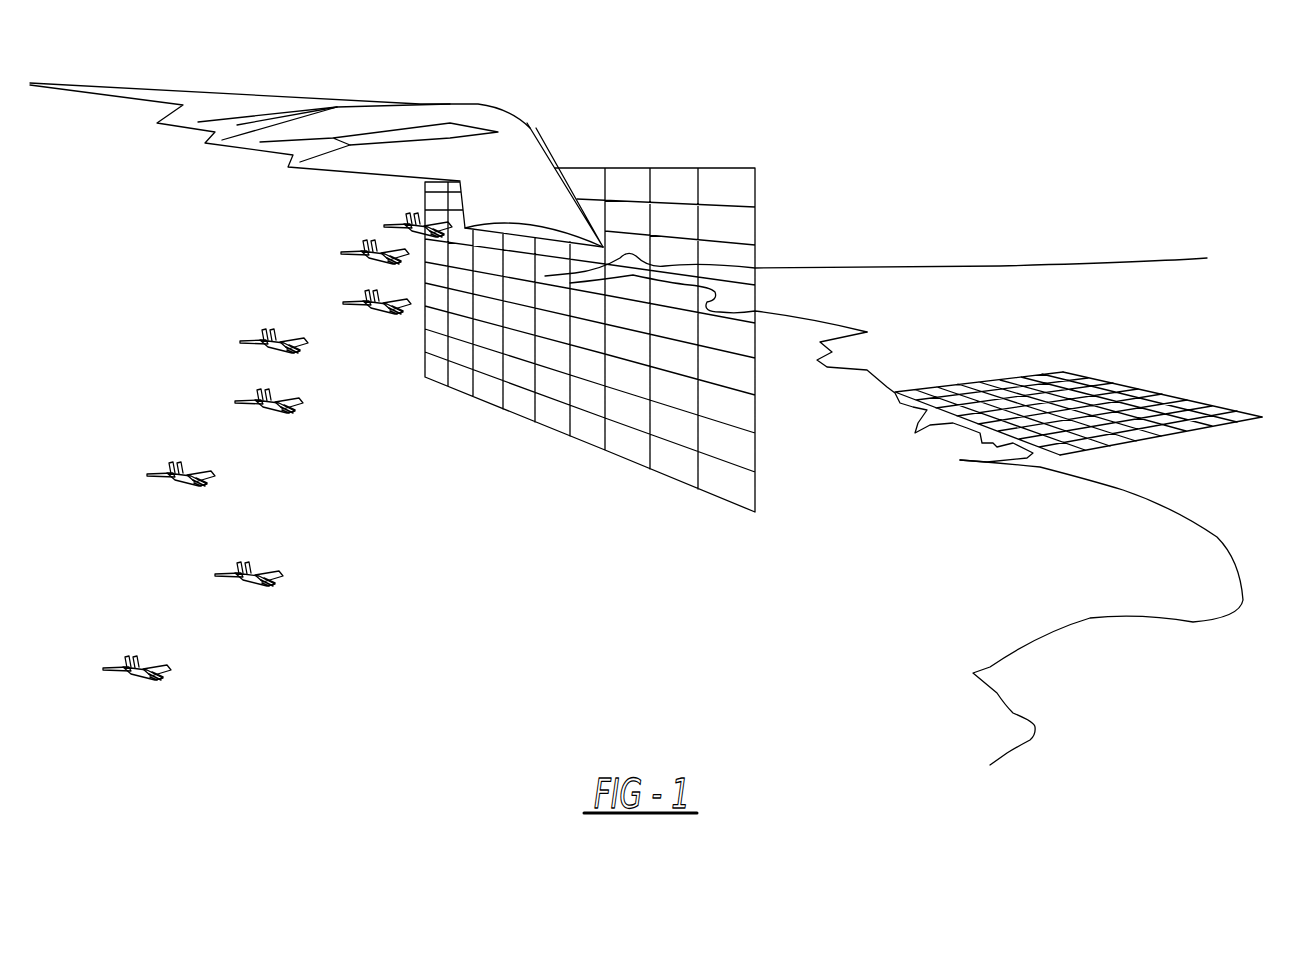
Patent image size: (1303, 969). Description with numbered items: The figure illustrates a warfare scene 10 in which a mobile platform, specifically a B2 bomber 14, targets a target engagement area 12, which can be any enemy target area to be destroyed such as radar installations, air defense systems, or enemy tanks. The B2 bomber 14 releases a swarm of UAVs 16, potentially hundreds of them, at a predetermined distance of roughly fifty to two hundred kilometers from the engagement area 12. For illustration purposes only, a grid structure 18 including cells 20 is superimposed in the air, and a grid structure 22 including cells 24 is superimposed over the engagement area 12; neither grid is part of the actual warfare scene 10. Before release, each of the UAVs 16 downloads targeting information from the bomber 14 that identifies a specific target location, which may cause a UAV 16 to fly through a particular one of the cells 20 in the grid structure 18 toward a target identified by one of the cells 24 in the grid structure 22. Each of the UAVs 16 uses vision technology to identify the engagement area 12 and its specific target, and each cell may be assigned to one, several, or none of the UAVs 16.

The warfare scene 10 is at (888, 68).
The target engagement area 12 is at (1141, 368).
The B2 bomber 14 is at (515, 162).
The UAVs 16 is at (350, 253).
The grid structure 18 is at (757, 233).
The cells 20 is at (725, 182).
The grid structure 22 is at (1185, 437).
The cells 24 is at (1183, 403).